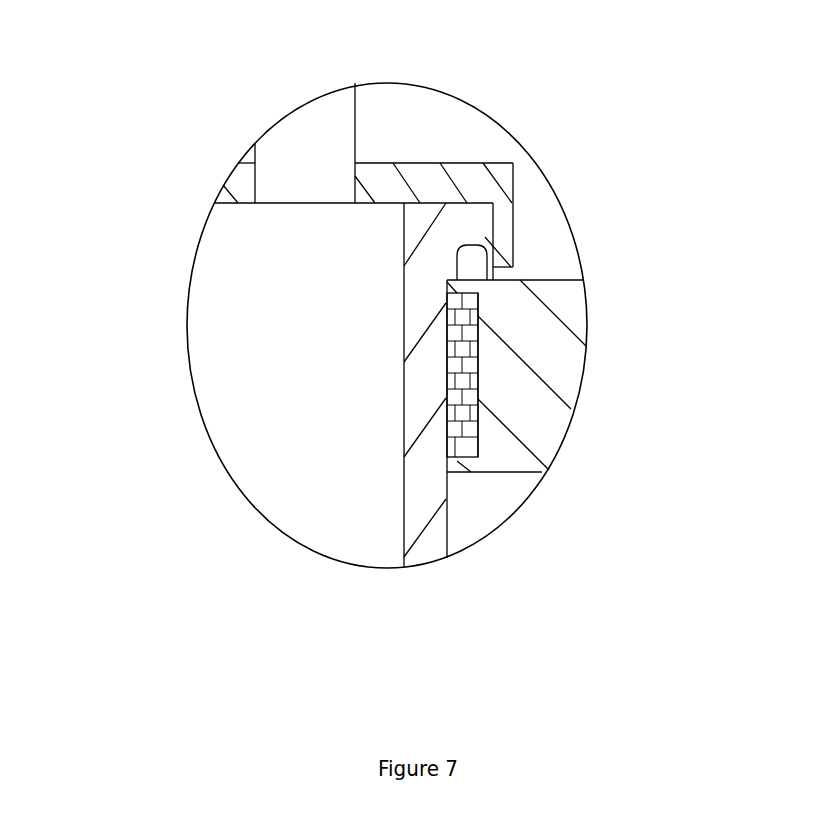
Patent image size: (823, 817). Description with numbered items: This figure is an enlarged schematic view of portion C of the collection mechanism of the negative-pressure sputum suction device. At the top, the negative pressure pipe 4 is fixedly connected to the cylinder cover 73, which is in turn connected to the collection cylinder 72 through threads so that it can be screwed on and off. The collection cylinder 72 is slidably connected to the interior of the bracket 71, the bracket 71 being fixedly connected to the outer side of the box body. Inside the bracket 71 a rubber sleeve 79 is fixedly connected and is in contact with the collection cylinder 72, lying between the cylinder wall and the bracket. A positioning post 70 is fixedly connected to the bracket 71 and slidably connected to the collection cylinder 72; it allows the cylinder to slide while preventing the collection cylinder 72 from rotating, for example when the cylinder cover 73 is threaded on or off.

The negative pressure pipe 4 is at (292, 138).
The portion C is at (190, 281).
The positioning post 70 is at (473, 267).
The bracket 71 is at (503, 374).
The collection cylinder 72 is at (423, 477).
The cylinder cover 73 is at (413, 185).
The rubber sleeve 79 is at (467, 438).